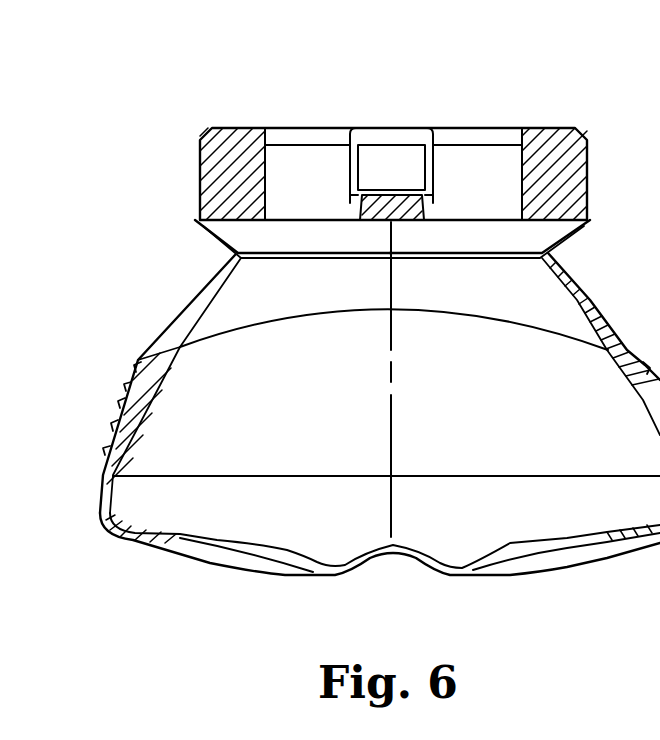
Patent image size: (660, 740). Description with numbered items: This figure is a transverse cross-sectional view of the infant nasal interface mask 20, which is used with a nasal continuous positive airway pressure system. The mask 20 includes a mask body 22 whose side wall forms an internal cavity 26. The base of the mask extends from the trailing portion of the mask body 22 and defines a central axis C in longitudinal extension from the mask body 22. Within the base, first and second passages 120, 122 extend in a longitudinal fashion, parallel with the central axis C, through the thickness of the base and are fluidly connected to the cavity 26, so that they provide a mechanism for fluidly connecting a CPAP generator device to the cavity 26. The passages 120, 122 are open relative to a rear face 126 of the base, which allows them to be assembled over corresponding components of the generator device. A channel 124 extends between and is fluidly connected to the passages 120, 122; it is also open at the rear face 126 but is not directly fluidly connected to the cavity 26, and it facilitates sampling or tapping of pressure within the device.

The infant nasal interface mask 20 is at (409, 46).
The mask body 22 is at (91, 469).
The internal cavity 26 is at (220, 515).
The first passage 120 is at (517, 206).
The second passage 122 is at (266, 206).
The channel 124 is at (391, 148).
The rear face 126 is at (548, 128).
The central axis C is at (392, 420).